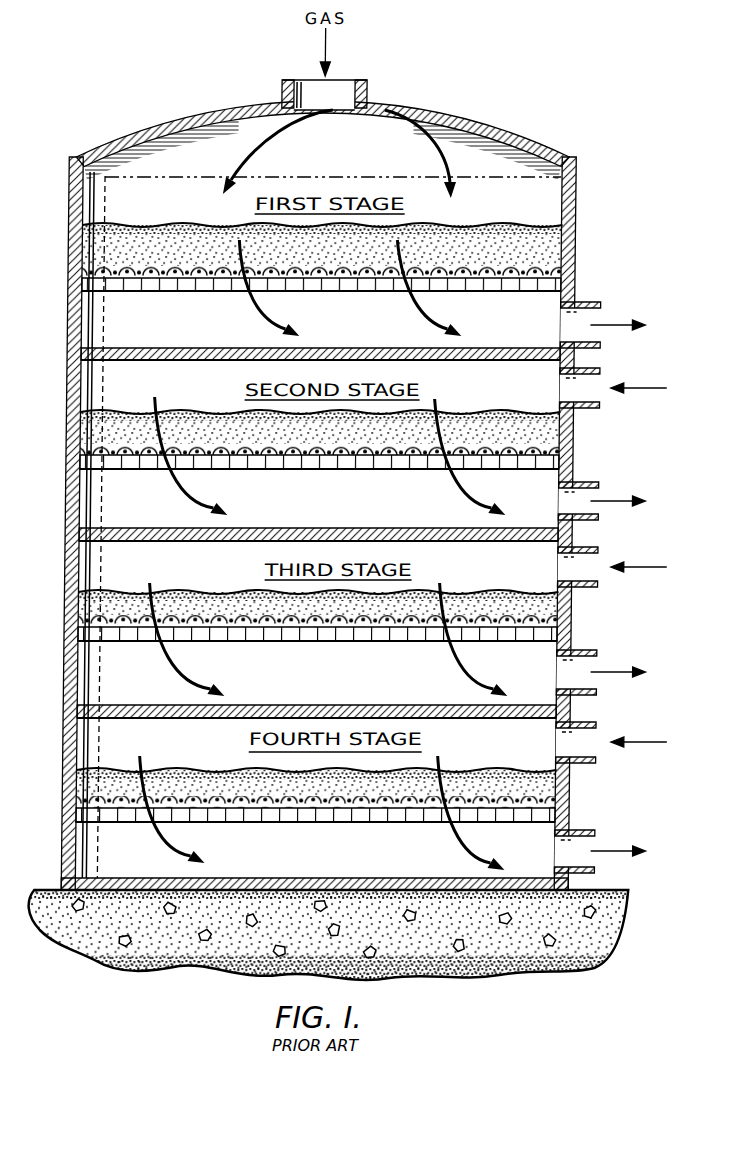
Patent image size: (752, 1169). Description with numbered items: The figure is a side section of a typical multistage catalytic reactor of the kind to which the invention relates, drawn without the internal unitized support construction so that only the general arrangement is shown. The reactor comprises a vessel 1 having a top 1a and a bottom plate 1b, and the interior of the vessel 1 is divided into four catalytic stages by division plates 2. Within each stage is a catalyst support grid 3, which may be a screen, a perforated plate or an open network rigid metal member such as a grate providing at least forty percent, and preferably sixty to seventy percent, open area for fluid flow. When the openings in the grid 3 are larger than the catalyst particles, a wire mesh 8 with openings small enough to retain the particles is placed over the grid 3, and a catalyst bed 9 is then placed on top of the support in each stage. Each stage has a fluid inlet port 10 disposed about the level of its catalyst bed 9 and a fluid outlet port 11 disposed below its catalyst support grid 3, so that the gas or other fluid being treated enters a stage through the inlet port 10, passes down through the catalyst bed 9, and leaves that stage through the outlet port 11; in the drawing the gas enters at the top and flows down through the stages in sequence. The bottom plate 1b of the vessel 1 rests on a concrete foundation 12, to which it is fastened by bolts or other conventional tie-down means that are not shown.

The vessel 1 is at (71, 502).
The top 1a is at (202, 113).
The bottom plate 1b is at (397, 879).
The division plates 2 is at (193, 350).
The catalyst support grid 3 is at (321, 287).
The wire mesh 8 is at (172, 270).
The catalyst bed 9 is at (465, 244).
The fluid inlet port 10 is at (339, 96).
The fluid outlet port 11 is at (600, 322).
The concrete foundation 12 is at (341, 950).